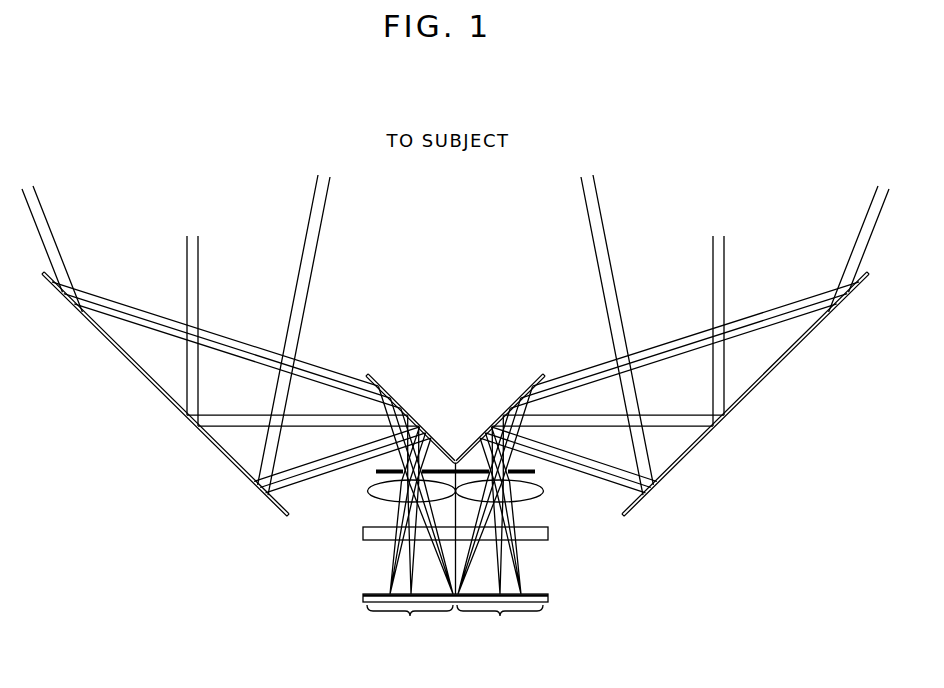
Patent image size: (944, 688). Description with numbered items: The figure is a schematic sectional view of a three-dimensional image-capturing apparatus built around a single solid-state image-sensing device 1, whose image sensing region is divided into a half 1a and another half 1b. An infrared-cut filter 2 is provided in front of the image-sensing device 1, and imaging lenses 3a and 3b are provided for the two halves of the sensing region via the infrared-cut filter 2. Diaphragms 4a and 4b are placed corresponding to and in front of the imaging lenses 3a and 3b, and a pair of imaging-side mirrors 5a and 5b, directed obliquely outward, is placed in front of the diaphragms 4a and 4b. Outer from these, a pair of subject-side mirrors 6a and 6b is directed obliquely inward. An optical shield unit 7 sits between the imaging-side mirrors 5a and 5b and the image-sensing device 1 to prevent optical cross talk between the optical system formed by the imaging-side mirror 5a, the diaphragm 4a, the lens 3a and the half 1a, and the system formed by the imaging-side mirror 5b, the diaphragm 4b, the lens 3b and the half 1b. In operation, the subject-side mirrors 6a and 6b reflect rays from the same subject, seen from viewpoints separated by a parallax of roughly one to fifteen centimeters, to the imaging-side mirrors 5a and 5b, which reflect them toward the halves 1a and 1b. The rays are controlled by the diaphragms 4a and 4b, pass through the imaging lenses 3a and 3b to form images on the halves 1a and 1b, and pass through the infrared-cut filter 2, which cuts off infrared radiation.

The solid-state image-sensing device 1 is at (369, 593).
The half of the image sensing region 1a is at (410, 626).
The half of the image sensing region 1b is at (500, 626).
The infrared-cut filter 2 is at (540, 543).
The imaging lens 3a is at (367, 500).
The imaging lens 3b is at (544, 500).
The diaphragm 4a is at (377, 472).
The diaphragm 4b is at (534, 472).
The imaging-side mirror 5a is at (386, 386).
The imaging-side mirror 5b is at (525, 386).
The subject-side mirror 6a is at (157, 392).
The subject-side mirror 6b is at (754, 392).
The optical shield unit 7 is at (458, 478).